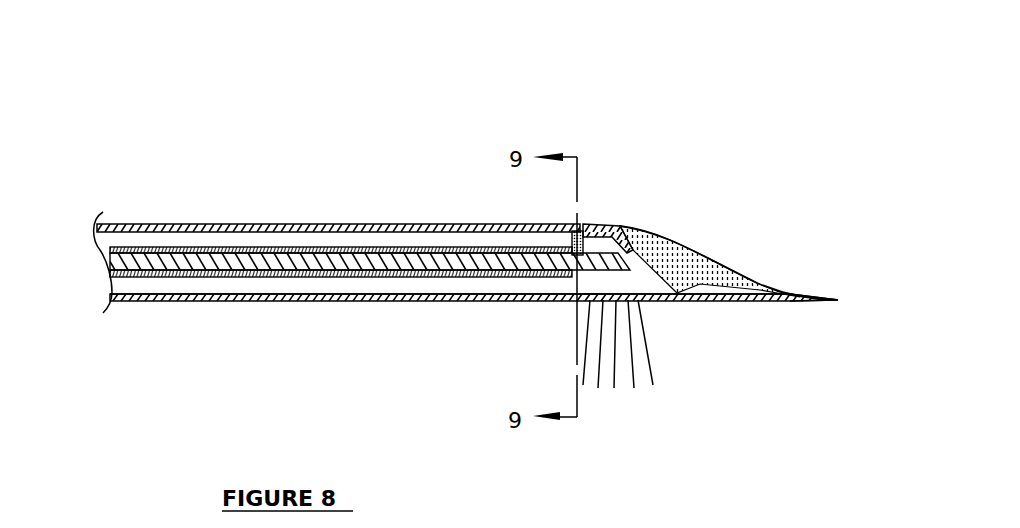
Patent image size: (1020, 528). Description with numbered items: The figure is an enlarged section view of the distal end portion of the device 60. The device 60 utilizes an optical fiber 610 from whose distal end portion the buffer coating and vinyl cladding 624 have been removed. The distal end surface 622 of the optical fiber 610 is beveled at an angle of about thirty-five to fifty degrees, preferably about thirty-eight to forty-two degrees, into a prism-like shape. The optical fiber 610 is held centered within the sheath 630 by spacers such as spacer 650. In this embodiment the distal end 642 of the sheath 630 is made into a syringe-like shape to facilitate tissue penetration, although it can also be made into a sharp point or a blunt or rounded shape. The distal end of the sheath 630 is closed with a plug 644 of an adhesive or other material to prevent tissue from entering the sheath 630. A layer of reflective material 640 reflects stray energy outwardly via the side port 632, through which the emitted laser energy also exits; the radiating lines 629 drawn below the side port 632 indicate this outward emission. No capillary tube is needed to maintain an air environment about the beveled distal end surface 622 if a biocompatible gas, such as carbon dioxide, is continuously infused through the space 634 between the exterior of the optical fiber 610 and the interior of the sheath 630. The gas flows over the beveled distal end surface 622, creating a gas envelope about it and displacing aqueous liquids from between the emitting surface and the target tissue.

The device 60 is at (393, 343).
The optical fiber 610 is at (331, 234).
The distal end surface 622 is at (683, 243).
The buffer coating and vinyl cladding 624 is at (173, 280).
The fluid spray 629 is at (647, 352).
The sheath 630 is at (147, 223).
The side port 632 is at (590, 303).
The space 634 is at (323, 283).
The layer of reflective material 640 is at (637, 235).
The distal end 642 is at (723, 277).
The plug 644 is at (765, 292).
The spacer 650 is at (565, 242).